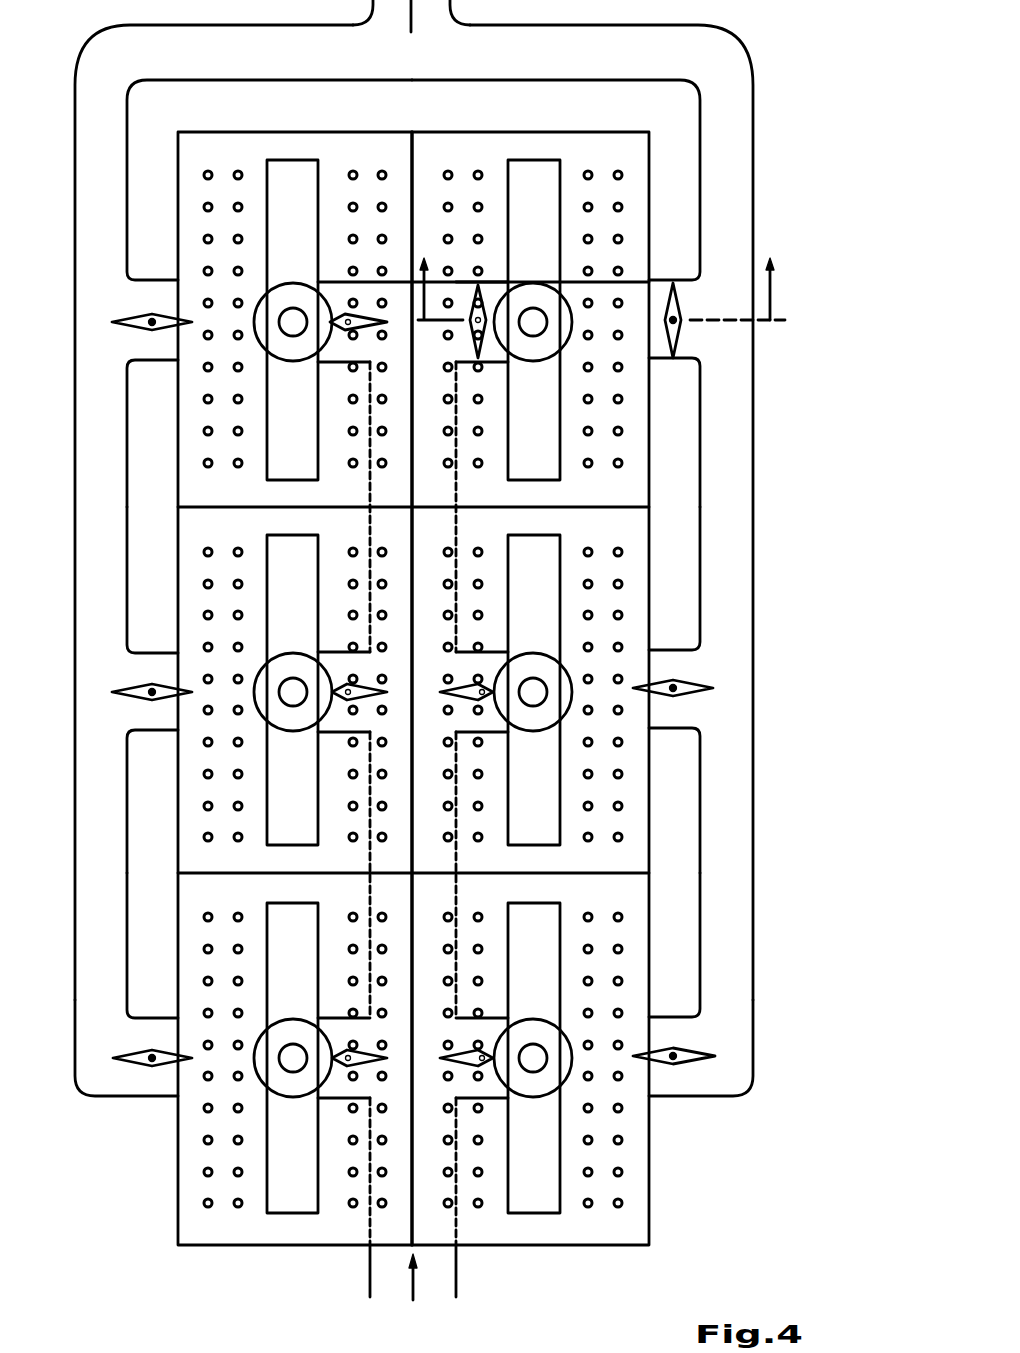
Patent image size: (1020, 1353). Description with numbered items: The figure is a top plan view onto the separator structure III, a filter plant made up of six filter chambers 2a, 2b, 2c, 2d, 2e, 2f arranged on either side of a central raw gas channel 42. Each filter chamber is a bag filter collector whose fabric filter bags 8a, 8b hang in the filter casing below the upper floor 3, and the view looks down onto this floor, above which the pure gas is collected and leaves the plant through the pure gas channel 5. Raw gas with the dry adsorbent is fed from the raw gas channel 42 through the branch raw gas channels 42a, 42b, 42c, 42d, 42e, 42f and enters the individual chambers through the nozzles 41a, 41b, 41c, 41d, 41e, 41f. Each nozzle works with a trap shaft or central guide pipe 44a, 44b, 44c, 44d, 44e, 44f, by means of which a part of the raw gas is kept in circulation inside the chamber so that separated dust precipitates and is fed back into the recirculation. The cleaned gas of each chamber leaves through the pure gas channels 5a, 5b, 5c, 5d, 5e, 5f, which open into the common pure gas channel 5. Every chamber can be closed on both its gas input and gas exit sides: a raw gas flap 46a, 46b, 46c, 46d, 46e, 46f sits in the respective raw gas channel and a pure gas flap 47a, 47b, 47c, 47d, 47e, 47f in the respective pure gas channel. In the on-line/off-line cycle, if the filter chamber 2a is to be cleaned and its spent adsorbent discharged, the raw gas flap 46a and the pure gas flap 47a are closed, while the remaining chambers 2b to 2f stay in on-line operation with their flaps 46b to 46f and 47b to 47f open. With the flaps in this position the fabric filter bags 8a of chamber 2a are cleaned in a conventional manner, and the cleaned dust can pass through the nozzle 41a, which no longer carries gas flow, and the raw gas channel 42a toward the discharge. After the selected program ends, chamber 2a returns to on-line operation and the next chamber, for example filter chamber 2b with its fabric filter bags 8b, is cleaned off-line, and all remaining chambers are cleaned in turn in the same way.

The separator structure III is at (753, 863).
The upper floor 3 is at (601, 275).
The pure gas channel 5 is at (443, 20).
The pure gas channel 5a is at (687, 352).
The pure gas channel 5b is at (172, 350).
The pure gas channel 5c is at (685, 717).
The pure gas channel 5d is at (173, 717).
The pure gas channel 5e is at (693, 1072).
The pure gas channel 5f is at (170, 1080).
The filter chamber 2a is at (650, 200).
The filter chamber 2b is at (178, 228).
The filter chamber 2c is at (650, 582).
The filter chamber 2d is at (178, 607).
The filter chamber 2e is at (650, 982).
The filter chamber 2f is at (178, 984).
The fabric filter bags 8a is at (618, 170).
The fabric filter bags 8b is at (382, 170).
The nozzle 41a is at (533, 306).
The nozzle 41b is at (293, 306).
The nozzle 41c is at (533, 676).
The nozzle 41d is at (293, 676).
The nozzle 41e is at (533, 1042).
The nozzle 41f is at (293, 1042).
The raw gas channel 42 is at (460, 1262).
The raw gas channel 42a is at (533, 364).
The raw gas channel 42b is at (293, 364).
The raw gas channel 42c is at (533, 734).
The raw gas channel 42d is at (293, 734).
The raw gas channel 42e is at (533, 1100).
The raw gas channel 42f is at (295, 1100).
The central guide pipe 44a is at (560, 460).
The central guide pipe 44b is at (267, 468).
The central guide pipe 44c is at (560, 828).
The central guide pipe 44d is at (267, 835).
The central guide pipe 44e is at (552, 1208).
The central guide pipe 44f is at (277, 1213).
The raw gas flap 46a is at (485, 352).
The raw gas flap 46b is at (347, 331).
The raw gas flap 46c is at (485, 701).
The raw gas flap 46d is at (346, 701).
The raw gas flap 46e is at (465, 1066).
The raw gas flap 46f is at (357, 1066).
The pure gas flap 47a is at (682, 306).
The pure gas flap 47b is at (132, 315).
The pure gas flap 47c is at (690, 686).
The pure gas flap 47d is at (132, 687).
The pure gas flap 47e is at (693, 1048).
The pure gas flap 47f is at (132, 1053).